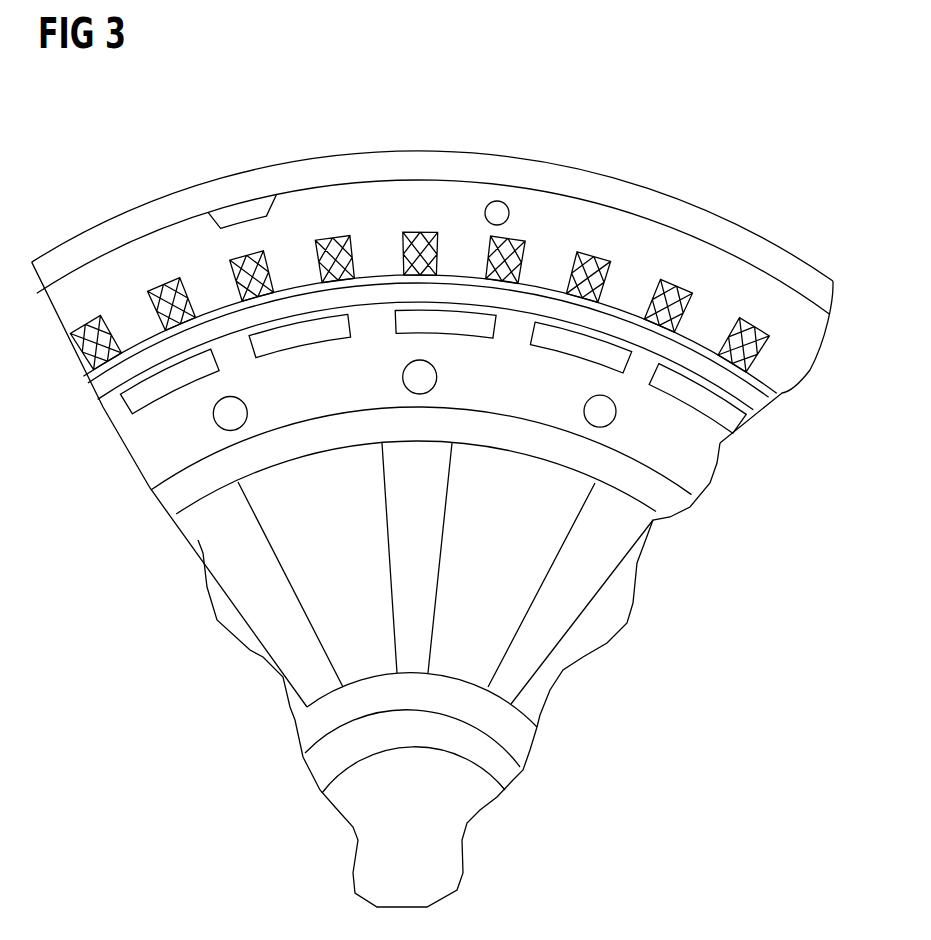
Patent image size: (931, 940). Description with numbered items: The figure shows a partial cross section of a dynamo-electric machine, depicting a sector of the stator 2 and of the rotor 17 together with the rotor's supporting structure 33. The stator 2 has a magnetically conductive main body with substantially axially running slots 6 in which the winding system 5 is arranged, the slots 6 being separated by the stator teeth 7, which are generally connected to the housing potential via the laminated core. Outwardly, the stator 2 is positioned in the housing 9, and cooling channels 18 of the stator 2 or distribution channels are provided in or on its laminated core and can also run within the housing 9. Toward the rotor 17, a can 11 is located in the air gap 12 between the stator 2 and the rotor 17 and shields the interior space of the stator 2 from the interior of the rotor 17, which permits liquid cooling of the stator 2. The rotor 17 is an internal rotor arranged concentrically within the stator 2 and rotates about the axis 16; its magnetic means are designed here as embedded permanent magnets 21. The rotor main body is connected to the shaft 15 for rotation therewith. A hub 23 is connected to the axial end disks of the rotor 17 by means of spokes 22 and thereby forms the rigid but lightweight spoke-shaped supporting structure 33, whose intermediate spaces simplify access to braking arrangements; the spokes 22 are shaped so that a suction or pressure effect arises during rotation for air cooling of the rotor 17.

The stator 2 is at (813, 330).
The winding system 5 is at (670, 274).
The slots 6 is at (600, 228).
The stator teeth 7 is at (460, 240).
The housing 9 is at (781, 260).
The can 11 is at (780, 393).
The air gap 12 is at (768, 403).
The shaft 15 is at (515, 781).
The axis 16 is at (412, 848).
The rotor 17 is at (146, 447).
The cooling channels 18 is at (236, 207).
The permanent magnets 21 is at (128, 404).
The spokes 22 is at (612, 552).
The hub 23 is at (534, 742).
The supporting structure 33 is at (683, 510).